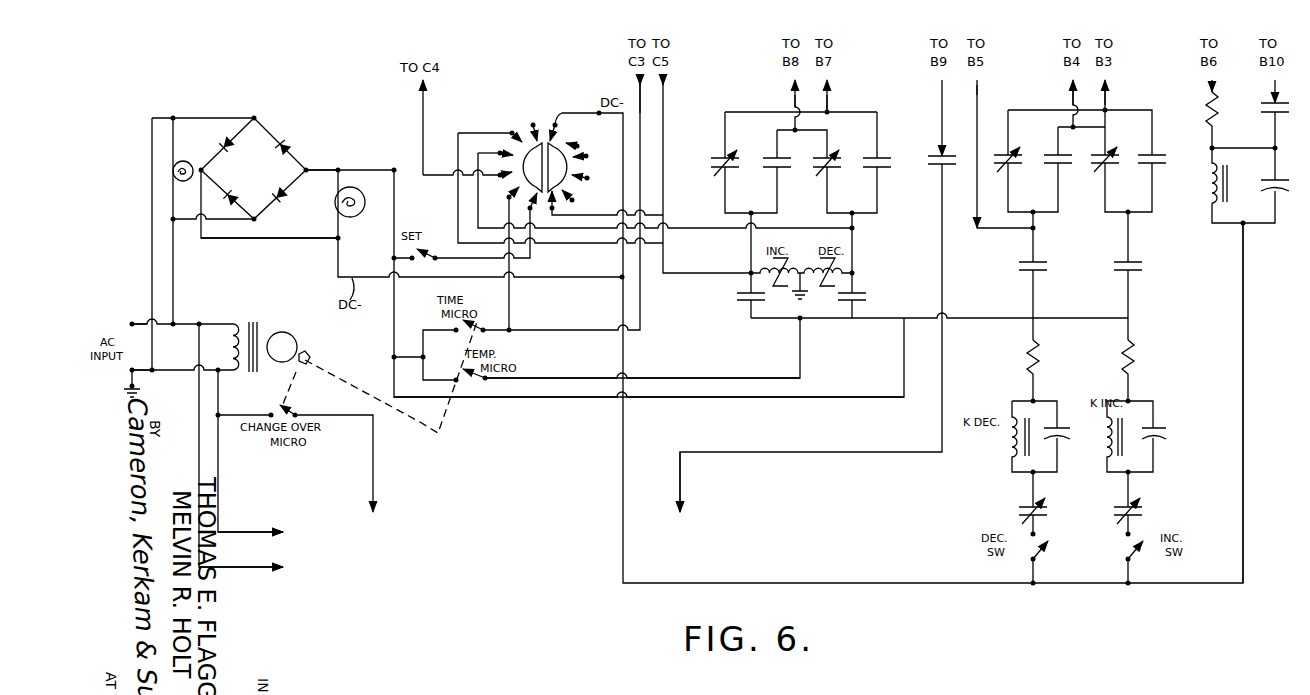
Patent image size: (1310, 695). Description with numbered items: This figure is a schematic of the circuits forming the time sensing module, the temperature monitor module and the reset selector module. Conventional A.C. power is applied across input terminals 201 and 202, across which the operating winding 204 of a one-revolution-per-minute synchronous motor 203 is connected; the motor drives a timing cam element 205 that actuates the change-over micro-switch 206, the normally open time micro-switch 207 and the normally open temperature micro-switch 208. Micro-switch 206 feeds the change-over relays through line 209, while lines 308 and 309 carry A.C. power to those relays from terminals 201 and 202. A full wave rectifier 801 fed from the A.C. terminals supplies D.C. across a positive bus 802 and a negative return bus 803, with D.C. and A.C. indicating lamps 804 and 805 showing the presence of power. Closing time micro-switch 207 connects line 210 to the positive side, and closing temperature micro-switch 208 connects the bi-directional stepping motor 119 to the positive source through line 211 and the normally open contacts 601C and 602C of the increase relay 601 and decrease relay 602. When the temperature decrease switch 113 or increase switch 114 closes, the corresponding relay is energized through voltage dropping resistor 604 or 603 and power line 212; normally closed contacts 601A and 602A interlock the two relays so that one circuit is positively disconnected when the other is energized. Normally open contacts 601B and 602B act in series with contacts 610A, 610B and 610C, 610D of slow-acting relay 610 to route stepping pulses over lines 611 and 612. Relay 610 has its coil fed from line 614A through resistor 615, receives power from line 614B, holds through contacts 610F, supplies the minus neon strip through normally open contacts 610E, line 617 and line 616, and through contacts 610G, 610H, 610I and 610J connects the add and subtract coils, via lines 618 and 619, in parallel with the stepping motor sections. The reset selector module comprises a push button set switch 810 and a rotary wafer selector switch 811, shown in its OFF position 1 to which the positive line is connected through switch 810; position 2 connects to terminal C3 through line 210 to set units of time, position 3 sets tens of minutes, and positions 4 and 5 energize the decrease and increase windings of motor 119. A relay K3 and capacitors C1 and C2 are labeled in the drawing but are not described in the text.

The full wave rectifier 801 is at (253, 168).
The positive bus 802 is at (316, 165).
The negative return bus 803 is at (259, 241).
The D.C. indicating lamp 804 is at (355, 193).
The A.C. indicating lamp 805 is at (183, 159).
The A.C. input terminal 201 is at (129, 313).
The A.C. input terminal 202 is at (124, 378).
The synchronous motor 203 is at (292, 337).
The operating winding 204 is at (241, 323).
The timing cam element 205 is at (308, 352).
The change-over micro-switch 206 is at (296, 410).
The time micro-switch 207 is at (473, 328).
The temperature micro-switch 208 is at (479, 380).
The change-over pulse line 209 is at (378, 498).
The line 308 is at (246, 566).
The line 309 is at (262, 525).
The set switch 810 is at (433, 253).
The rotary wafer type selector switch 811 is at (565, 155).
The position 1 is at (528, 205).
The position 2 is at (507, 199).
The position 3 is at (499, 169).
The position 4 is at (500, 147).
The position 5 is at (514, 130).
The line 210 is at (638, 88).
The power input line 211 is at (678, 377).
The power line 212 is at (677, 399).
The line 618 is at (793, 90).
The line 619 is at (830, 90).
The line 617 is at (941, 90).
The contacts of relay 610 610G is at (721, 157).
The contacts of relay 610 610H is at (771, 157).
The contacts of relay 610 610I is at (823, 157).
The contacts of relay 610 610J is at (873, 157).
The normally open contacts of relay 610 610E is at (936, 168).
The bi-directional stepping motor 119 is at (801, 263).
The normally open contacts of increase relay 601C is at (742, 315).
The normally open contacts of decrease relay 602C is at (861, 304).
The line 614B is at (979, 90).
The line 612 is at (1072, 91).
The line 611 is at (1107, 90).
The contacts of relay 610 610C is at (1010, 147).
The contacts of relay 610 610D is at (1060, 153).
The contacts of relay 610 610A is at (1108, 147).
The contacts of relay 610 610B is at (1160, 152).
The line 614A is at (1195, 91).
The voltage dropping resistor 615 is at (1219, 118).
The holding contacts of relay 610 610F is at (1263, 115).
The relay 610 is at (1210, 198).
The relay K3 is at (1192, 188).
The capacitor C1 is at (1285, 171).
The normally open contacts of decrease relay 602B is at (1025, 273).
The normally open contacts of increase relay 601B is at (1133, 273).
The voltage dropping resistor 604 is at (1042, 355).
The voltage dropping resistor 603 is at (1138, 354).
The decrease relay 602 is at (1010, 437).
The increase relay 601 is at (1107, 441).
The capacitor C2 is at (1060, 425).
The terminal C3 is at (1158, 425).
The normally closed contacts of increase relay 601A is at (1022, 507).
The normally closed contacts of decrease relay 602A is at (1142, 511).
The temperature decrease switch 113 is at (1044, 550).
The temperature increase switch 114 is at (1136, 553).
The line 616 is at (680, 484).